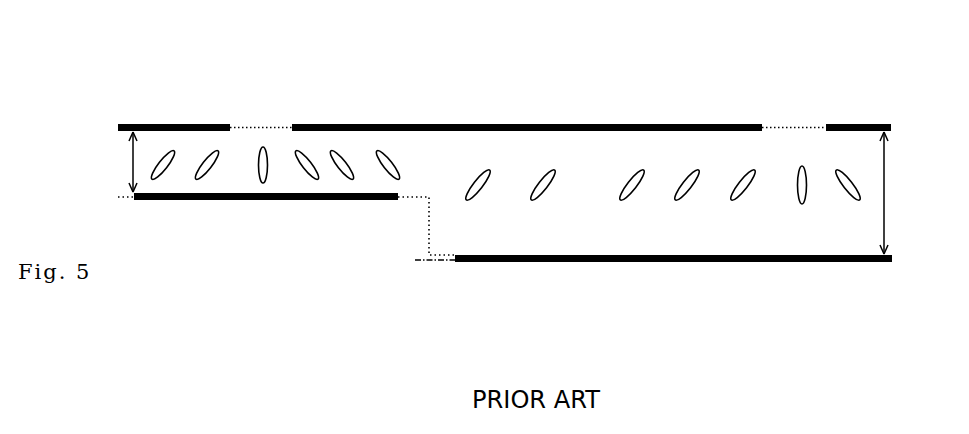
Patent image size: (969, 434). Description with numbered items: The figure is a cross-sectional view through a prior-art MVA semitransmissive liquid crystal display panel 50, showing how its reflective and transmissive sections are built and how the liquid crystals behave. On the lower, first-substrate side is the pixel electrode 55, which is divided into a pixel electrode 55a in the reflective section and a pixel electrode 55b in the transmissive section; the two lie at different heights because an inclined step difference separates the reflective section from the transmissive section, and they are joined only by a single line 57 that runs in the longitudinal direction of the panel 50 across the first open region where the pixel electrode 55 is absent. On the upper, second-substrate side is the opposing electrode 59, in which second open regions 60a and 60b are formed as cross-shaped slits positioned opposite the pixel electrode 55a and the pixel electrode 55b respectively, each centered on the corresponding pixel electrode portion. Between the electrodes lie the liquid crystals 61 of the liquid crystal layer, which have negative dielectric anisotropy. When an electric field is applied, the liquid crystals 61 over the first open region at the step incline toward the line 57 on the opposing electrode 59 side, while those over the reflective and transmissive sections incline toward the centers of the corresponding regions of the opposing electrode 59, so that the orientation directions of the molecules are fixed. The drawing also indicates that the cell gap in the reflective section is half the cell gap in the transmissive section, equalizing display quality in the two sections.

The semitransmissive liquid crystal display panel 50 is at (186, 38).
The opposing electrode 59 is at (451, 124).
The second open region 60a is at (283, 124).
The second open region 60b is at (799, 124).
The pixel electrode 55 is at (505, 272).
The pixel electrode 55a is at (302, 200).
The pixel electrode 55b is at (457, 262).
The line 57 is at (430, 223).
The liquid crystals 61 is at (505, 195).